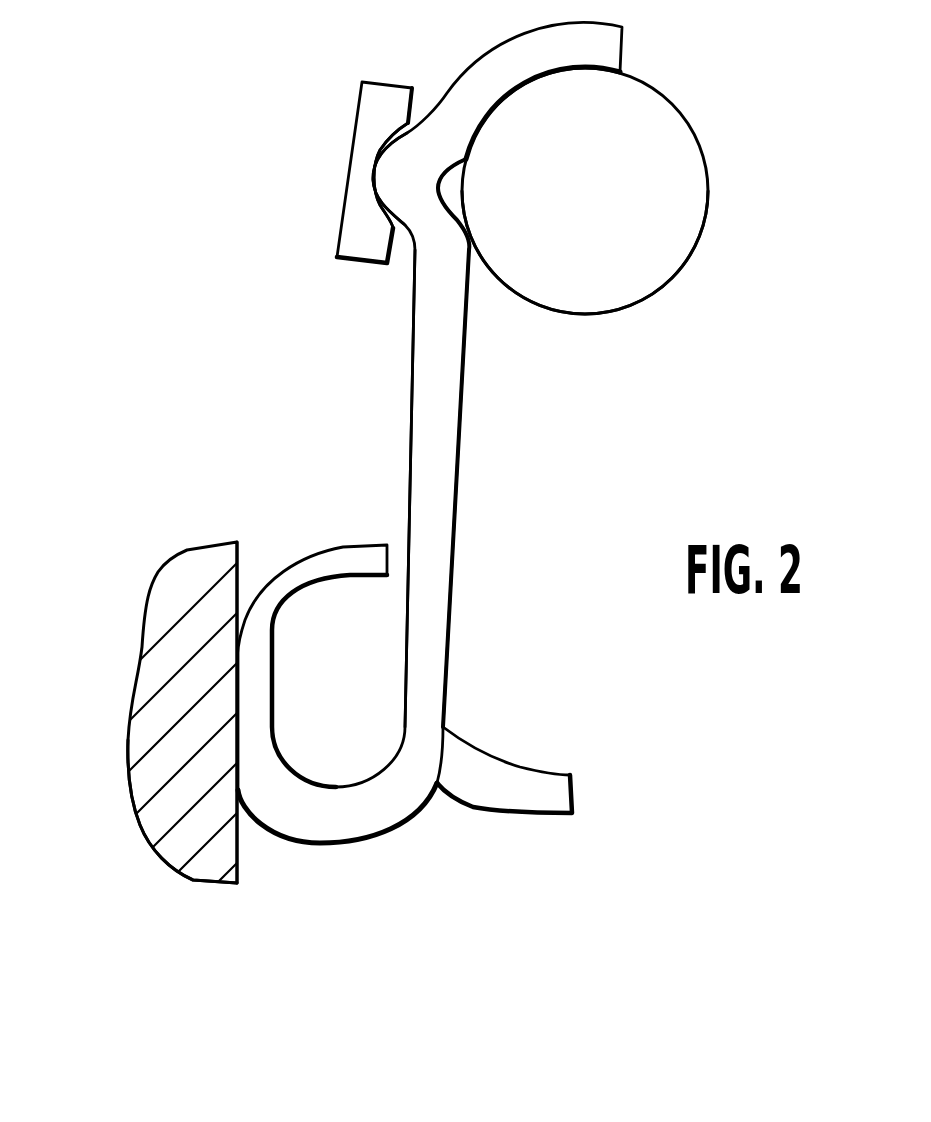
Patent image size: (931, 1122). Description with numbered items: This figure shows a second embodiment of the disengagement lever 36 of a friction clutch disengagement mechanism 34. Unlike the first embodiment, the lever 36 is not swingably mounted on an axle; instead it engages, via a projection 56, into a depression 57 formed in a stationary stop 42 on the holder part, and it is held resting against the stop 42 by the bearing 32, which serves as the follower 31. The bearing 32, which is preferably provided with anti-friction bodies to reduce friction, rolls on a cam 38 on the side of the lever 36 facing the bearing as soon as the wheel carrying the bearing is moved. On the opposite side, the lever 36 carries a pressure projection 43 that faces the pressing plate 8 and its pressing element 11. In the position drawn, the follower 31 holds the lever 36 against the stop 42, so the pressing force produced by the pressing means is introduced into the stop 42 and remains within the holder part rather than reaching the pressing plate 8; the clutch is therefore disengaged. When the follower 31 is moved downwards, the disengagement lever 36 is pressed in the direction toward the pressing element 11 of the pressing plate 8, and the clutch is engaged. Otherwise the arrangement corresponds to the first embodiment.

The pressing plate 8 is at (167, 845).
The pressing element 11 is at (188, 575).
The follower 31 is at (658, 108).
The bearing 32 is at (662, 260).
The disengagement mechanism 34 is at (455, 840).
The disengagement lever 36 is at (440, 472).
The cam 38 is at (477, 752).
The stop 42 is at (358, 247).
The pressure projection 43 is at (233, 708).
The projection 56 is at (412, 163).
The depression 57 is at (400, 192).